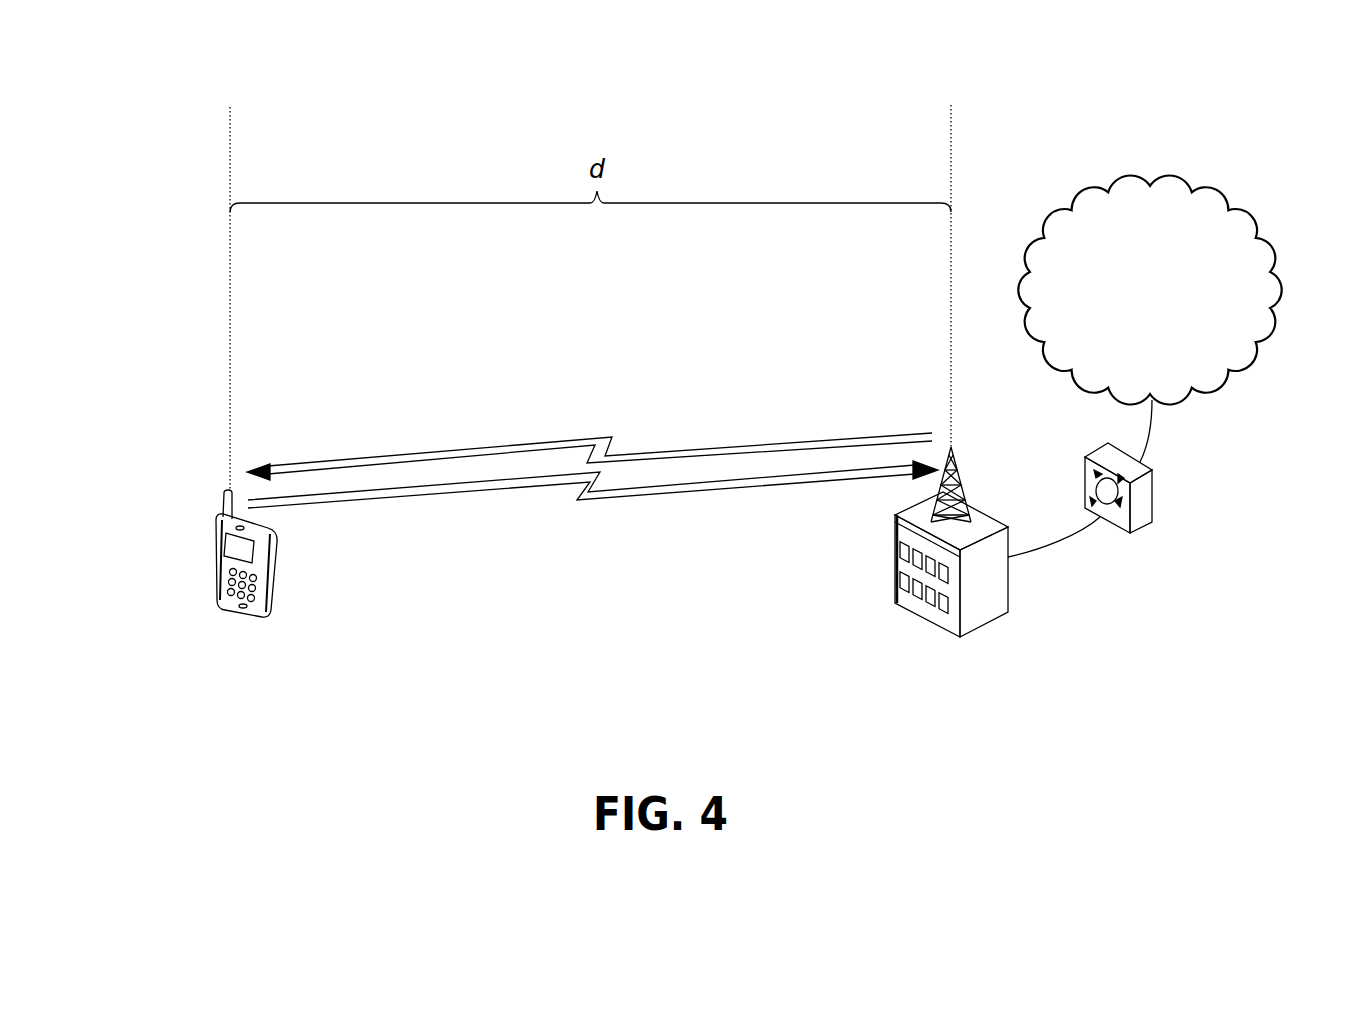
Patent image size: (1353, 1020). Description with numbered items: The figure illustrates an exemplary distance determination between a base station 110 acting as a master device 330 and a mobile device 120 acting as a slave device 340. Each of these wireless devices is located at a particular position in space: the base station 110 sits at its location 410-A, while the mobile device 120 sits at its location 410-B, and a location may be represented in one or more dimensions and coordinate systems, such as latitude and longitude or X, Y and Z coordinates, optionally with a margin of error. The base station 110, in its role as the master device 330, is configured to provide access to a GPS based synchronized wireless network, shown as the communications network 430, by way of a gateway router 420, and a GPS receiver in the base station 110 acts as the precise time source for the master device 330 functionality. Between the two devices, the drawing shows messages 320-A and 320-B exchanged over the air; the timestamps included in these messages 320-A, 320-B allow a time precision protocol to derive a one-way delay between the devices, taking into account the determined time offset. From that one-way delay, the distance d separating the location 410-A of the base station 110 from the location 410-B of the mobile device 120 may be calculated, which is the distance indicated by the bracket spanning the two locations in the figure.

The location of the mobile device 410-B is at (228, 271).
The location of the base station 410-A is at (951, 247).
The message 320-A is at (628, 442).
The message 320-B is at (562, 500).
The mobile device 120 is at (255, 596).
The slave device 340 is at (255, 596).
The base station 110 is at (952, 575).
The master device 330 is at (952, 575).
The gateway router 420 is at (1127, 536).
The communications network 430 is at (1149, 290).